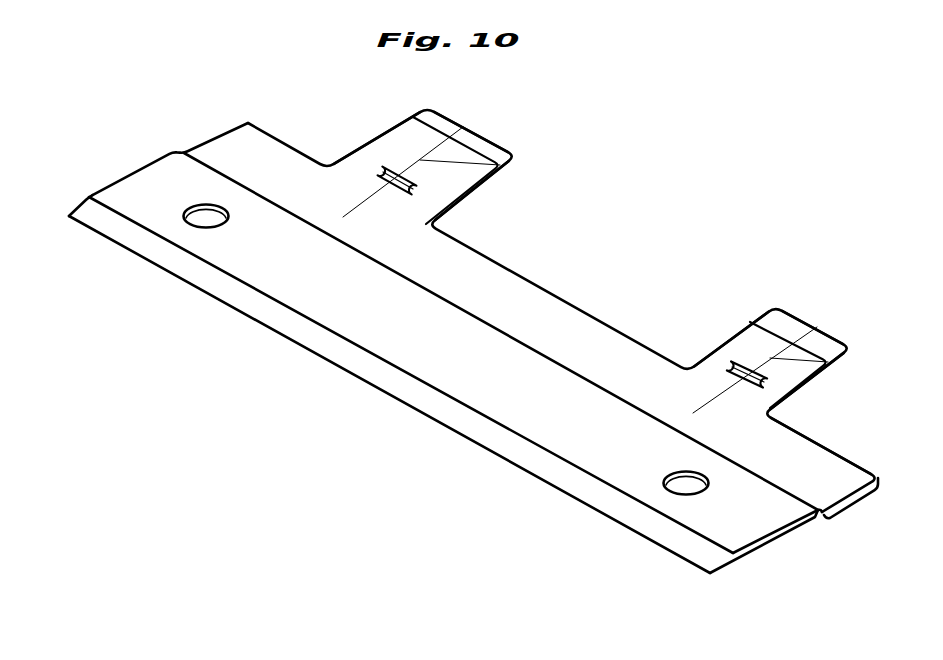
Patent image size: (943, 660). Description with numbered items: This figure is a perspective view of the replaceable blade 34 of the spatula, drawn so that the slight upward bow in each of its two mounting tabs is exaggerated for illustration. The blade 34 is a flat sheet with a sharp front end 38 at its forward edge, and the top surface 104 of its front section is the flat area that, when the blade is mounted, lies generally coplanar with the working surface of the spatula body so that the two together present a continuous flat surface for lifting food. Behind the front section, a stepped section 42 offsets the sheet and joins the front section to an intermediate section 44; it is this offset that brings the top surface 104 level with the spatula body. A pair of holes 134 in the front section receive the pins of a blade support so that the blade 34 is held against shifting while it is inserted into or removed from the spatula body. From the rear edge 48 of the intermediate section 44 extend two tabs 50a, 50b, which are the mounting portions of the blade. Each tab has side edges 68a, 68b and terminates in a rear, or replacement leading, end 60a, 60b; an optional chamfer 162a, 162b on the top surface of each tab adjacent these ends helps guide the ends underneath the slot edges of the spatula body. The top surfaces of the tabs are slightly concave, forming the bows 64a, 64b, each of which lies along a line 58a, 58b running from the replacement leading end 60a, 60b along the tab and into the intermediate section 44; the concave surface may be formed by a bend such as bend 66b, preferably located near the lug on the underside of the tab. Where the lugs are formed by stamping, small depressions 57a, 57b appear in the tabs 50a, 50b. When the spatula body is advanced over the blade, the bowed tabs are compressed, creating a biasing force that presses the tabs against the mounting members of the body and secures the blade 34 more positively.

The blade 34 is at (101, 157).
The sharp front end 38 is at (270, 318).
The stepped section 42 is at (818, 517).
The intermediate section 44 is at (845, 492).
The rear edge 48 is at (847, 458).
The tab 50a is at (402, 138).
The tab 50b is at (845, 370).
The depression 57a is at (415, 195).
The depression 57b is at (722, 358).
The line 58a is at (507, 173).
The line 58b is at (732, 352).
The replacement leading end 60a is at (448, 115).
The replacement leading end 60b is at (840, 330).
The bow 64a is at (395, 159).
The bow 64b is at (759, 321).
The bend 66b is at (772, 418).
The side edge 68a is at (463, 207).
The side edge 68b is at (806, 383).
The top surface 104 is at (442, 362).
The holes 134 is at (678, 483).
The chamfer 162a is at (488, 148).
The chamfer 162b is at (795, 318).